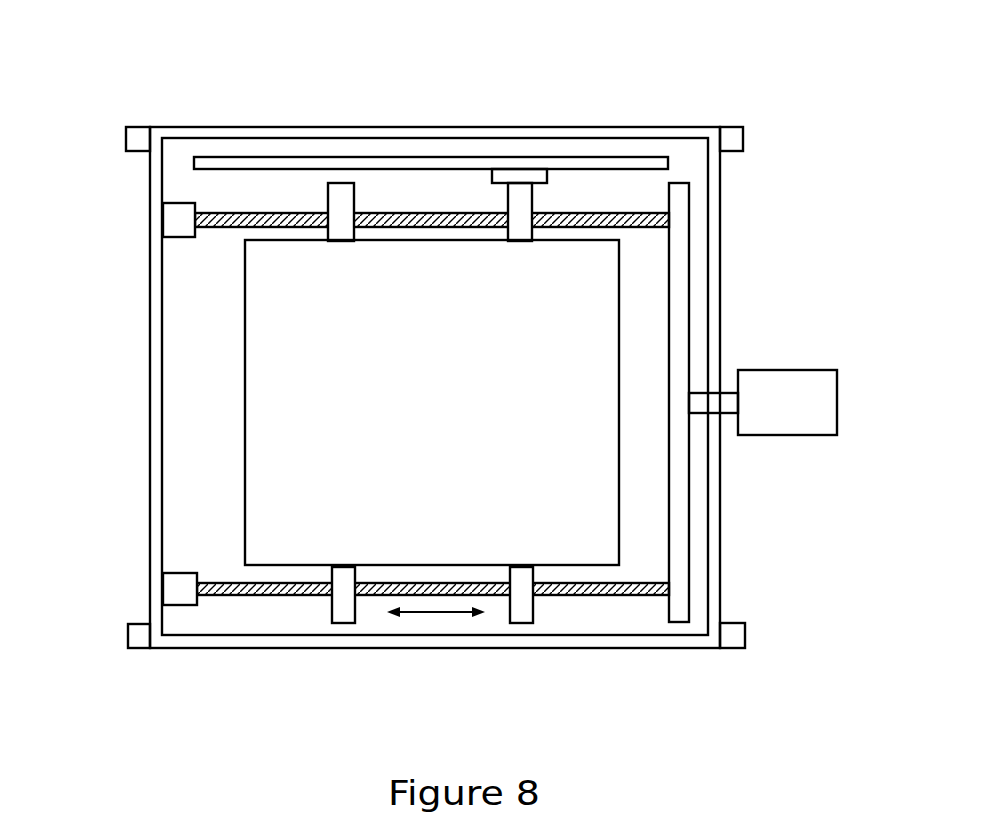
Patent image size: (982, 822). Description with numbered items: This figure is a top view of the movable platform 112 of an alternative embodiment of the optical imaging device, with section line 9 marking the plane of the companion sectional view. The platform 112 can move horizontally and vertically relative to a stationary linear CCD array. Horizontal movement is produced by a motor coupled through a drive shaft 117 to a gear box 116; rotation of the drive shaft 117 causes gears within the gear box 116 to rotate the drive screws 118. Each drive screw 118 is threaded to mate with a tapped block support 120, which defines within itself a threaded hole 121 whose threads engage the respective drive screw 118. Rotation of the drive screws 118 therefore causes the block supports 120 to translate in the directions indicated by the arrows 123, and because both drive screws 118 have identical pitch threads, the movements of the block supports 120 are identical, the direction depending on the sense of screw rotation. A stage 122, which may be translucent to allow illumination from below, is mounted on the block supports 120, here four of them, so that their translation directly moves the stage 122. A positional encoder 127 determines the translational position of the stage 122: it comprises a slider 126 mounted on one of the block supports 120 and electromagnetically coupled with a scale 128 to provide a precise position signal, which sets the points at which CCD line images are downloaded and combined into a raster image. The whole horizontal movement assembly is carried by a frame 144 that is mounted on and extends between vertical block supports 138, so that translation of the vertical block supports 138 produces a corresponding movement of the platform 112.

The section line 9- 9 is at (143, 505).
The platform 112 is at (817, 380).
The gear box 116 is at (688, 540).
The drive shaft 117 is at (726, 400).
The drive screws 118 is at (655, 220).
The block support 120 is at (342, 198).
The threaded hole 121 is at (565, 222).
The stage 122 is at (588, 377).
The arrows 123 is at (430, 617).
The slider 126 is at (401, 157).
The positional encoder 127 is at (530, 146).
The scale 128 is at (518, 177).
The vertical block supports 138 is at (138, 139).
The frame 144 is at (150, 292).